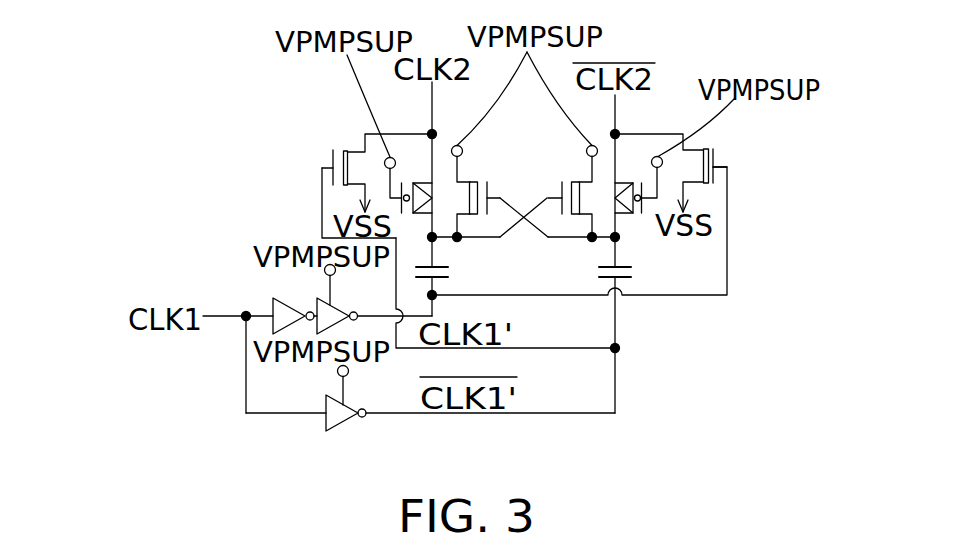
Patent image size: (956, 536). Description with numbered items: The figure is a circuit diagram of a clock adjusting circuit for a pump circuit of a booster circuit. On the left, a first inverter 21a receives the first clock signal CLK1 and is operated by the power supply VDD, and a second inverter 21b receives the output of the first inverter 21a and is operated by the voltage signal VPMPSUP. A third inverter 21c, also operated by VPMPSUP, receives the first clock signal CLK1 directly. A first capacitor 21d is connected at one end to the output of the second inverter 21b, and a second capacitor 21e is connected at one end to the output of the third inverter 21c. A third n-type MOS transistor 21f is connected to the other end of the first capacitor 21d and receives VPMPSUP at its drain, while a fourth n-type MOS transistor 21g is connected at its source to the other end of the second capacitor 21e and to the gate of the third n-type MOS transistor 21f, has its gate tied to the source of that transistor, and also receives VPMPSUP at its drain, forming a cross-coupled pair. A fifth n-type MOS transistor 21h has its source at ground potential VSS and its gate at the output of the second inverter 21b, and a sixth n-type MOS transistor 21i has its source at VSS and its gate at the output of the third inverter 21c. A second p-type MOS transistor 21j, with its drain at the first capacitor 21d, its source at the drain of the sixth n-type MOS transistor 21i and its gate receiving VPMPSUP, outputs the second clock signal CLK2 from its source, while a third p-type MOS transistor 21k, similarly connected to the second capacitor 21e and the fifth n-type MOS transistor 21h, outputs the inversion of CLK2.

The first inverter 21a is at (272, 308).
The second inverter 21b is at (372, 301).
The third inverter 21c is at (345, 425).
The first capacitor 21d is at (443, 264).
The second capacitor 21e is at (624, 264).
The third n-type MOS transistor 21f is at (482, 181).
The fourth n-type MOS transistor 21g is at (578, 181).
The fifth n-type MOS transistor 21h is at (718, 157).
The sixth n-type MOS transistor 21i is at (353, 149).
The second p-type MOS transistor 21j is at (422, 180).
The third p-type MOS transistor 21k is at (631, 181).